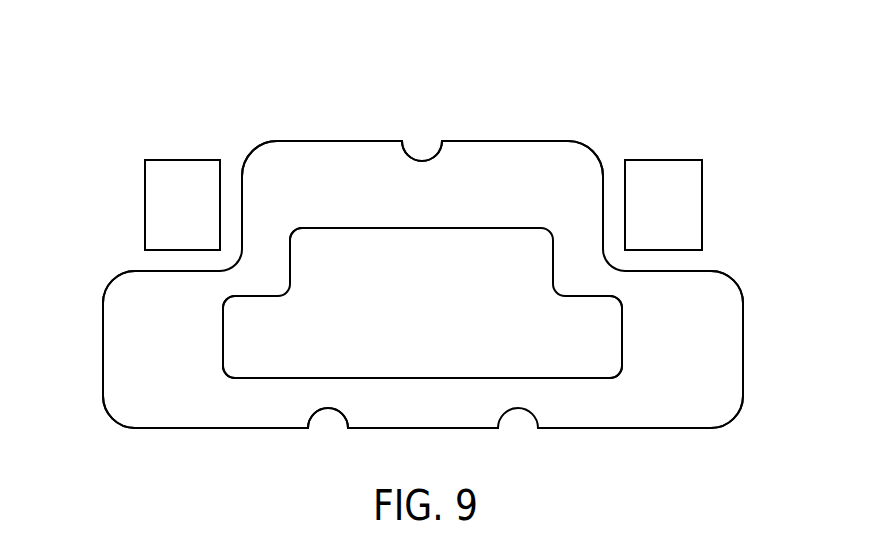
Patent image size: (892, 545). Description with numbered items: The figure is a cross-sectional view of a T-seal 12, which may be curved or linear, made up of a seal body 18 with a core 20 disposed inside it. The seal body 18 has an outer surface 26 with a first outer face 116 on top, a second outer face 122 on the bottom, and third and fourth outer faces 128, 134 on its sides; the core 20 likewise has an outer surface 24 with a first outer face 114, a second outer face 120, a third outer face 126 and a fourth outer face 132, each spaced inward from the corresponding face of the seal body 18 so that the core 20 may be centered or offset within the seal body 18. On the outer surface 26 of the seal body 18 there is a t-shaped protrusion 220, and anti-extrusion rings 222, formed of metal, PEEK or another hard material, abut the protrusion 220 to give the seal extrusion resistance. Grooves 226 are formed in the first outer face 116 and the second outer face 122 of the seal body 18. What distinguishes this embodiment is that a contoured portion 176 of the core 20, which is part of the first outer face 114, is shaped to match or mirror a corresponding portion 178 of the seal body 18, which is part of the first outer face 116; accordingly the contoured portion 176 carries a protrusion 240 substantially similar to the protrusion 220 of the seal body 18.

The T-seal 12 is at (636, 60).
The seal body 18 is at (586, 145).
The core 20 is at (550, 228).
The outer surface of the core 24 is at (331, 228).
The outer surface of the seal body 26 is at (287, 141).
The first outer face of the core 114 is at (378, 228).
The first outer face of the seal body 116 is at (524, 141).
The second outer face of the core 120 is at (364, 378).
The second outer face of the seal body 122 is at (592, 428).
The third outer face of the core 126 is at (622, 338).
The third outer face of the seal body 128 is at (743, 350).
The fourth outer face of the core 132 is at (223, 335).
The fourth outer face of the seal body 134 is at (103, 350).
The contoured portion of the core 176 is at (462, 228).
The corresponding portion of the seal body 178 is at (341, 141).
The protrusion 220 is at (474, 141).
The anti-extrusion rings 222 is at (160, 216).
The grooves 226 is at (423, 160).
The protrusion of the core 240 is at (422, 228).